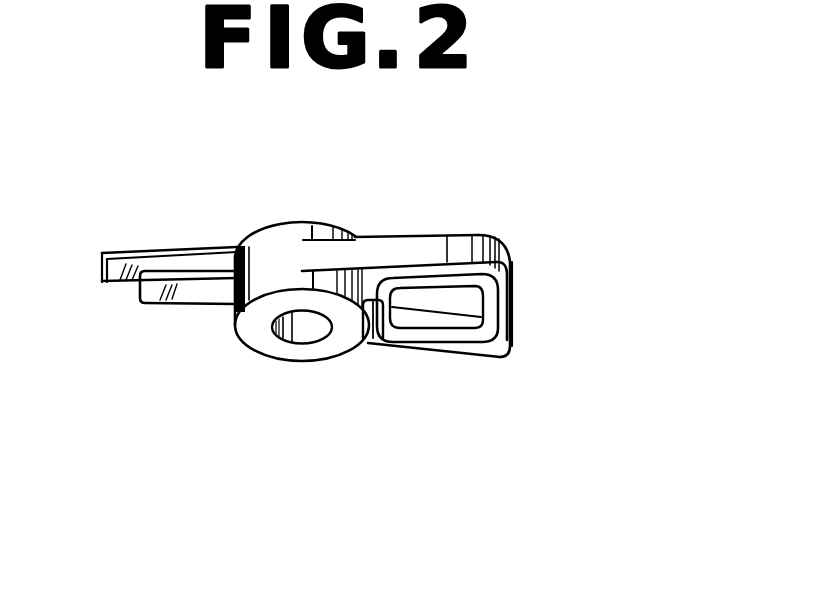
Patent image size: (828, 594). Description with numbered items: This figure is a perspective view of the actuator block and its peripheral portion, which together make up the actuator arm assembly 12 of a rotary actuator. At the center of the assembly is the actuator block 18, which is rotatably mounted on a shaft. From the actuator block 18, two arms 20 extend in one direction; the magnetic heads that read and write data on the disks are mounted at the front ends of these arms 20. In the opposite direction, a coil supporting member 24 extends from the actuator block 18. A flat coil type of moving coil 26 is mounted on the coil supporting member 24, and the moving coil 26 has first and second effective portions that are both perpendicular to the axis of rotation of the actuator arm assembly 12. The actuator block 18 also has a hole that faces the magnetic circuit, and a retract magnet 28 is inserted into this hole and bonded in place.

The actuator arm assembly 12 is at (272, 212).
The actuator block 18 is at (318, 231).
The arms 20 is at (153, 262).
The coil supporting member 24 is at (480, 233).
The moving coil 26 is at (447, 335).
The retract magnet 28 is at (371, 338).